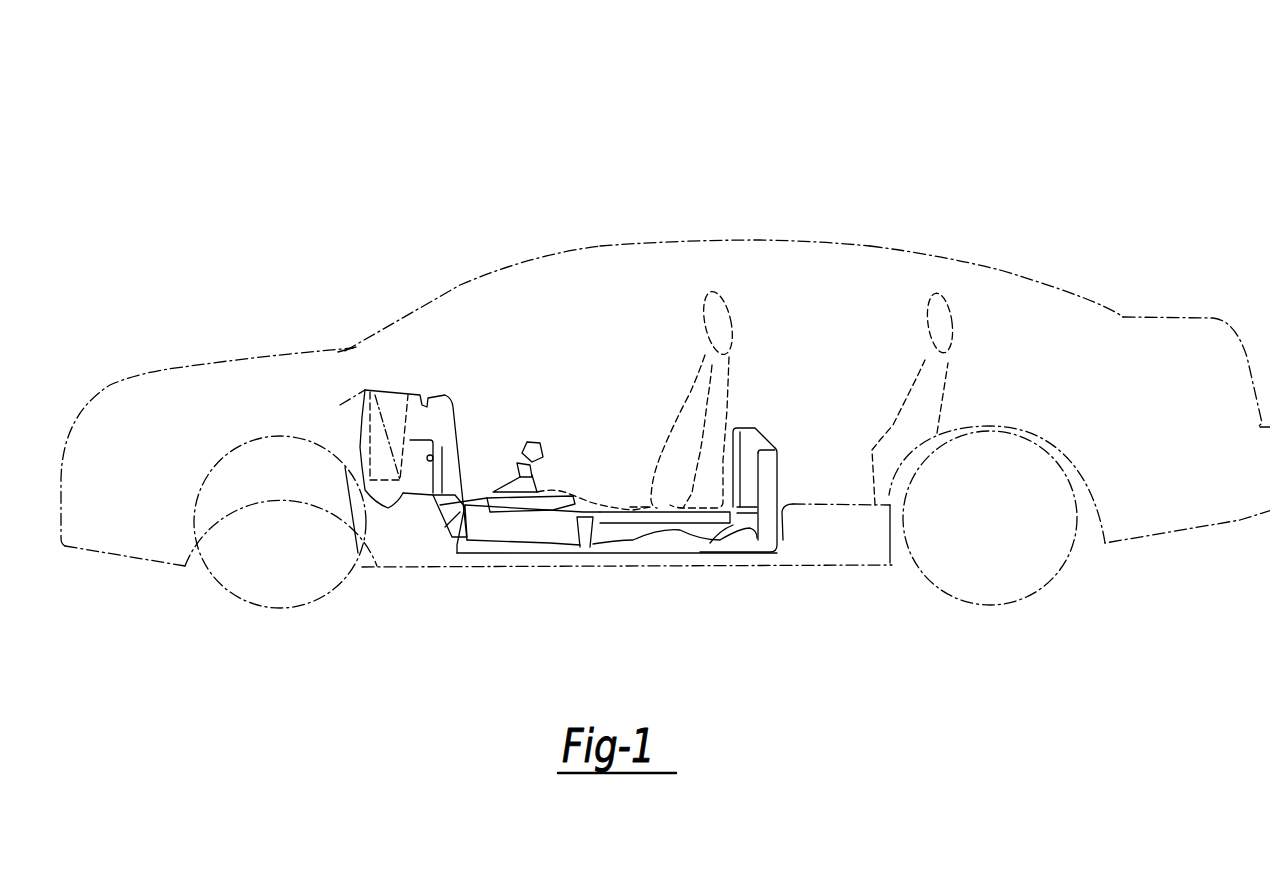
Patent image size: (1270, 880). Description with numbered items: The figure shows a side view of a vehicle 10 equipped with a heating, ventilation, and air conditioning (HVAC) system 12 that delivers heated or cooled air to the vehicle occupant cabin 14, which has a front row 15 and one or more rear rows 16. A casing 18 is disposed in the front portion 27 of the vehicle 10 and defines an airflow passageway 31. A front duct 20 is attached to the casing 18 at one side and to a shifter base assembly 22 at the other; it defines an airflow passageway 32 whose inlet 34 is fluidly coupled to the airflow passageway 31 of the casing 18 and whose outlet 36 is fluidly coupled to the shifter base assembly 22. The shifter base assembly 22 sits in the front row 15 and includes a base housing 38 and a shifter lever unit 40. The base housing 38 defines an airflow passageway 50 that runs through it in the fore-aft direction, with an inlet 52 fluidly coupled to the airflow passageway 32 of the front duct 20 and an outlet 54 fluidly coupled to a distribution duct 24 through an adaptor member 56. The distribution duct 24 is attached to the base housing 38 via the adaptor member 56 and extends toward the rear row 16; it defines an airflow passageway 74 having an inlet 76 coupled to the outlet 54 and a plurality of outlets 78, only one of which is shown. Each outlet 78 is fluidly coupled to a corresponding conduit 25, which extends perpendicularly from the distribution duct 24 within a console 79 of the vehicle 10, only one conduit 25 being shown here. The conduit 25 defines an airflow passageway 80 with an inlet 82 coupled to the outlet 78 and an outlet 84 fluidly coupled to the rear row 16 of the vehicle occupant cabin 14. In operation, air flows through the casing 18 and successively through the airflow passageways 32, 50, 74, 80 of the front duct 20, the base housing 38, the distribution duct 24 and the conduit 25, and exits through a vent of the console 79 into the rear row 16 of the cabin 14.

The vehicle 10 is at (806, 178).
The heating, ventilation, and air conditioning (HVAC) system 12 is at (556, 558).
The vehicle occupant cabin 14 is at (681, 270).
The front row 15 is at (603, 262).
The rear row 16 is at (870, 260).
The casing 18 is at (360, 417).
The front duct 20 is at (437, 512).
The shifter base assembly 22 is at (555, 458).
The distribution duct 24 is at (647, 538).
The conduit 25 is at (777, 457).
The front portion 27 is at (193, 387).
The airflow passageway 31 is at (392, 411).
The airflow passageway 32 is at (441, 507).
The inlet 34 is at (458, 497).
The outlet 36 is at (440, 523).
The base housing 38 is at (512, 543).
The shifter lever unit 40 is at (514, 438).
The airflow passageway 50 is at (536, 530).
The inlet 52 is at (476, 525).
The outlet 54 is at (580, 523).
The adaptor member 56 is at (587, 541).
The airflow passageway 74 is at (697, 532).
The inlet 76 is at (613, 523).
The outlet 78 is at (748, 527).
The console 79 is at (743, 427).
The airflow passageway 80 is at (742, 470).
The inlet 82 is at (752, 498).
The outlet 84 is at (758, 453).